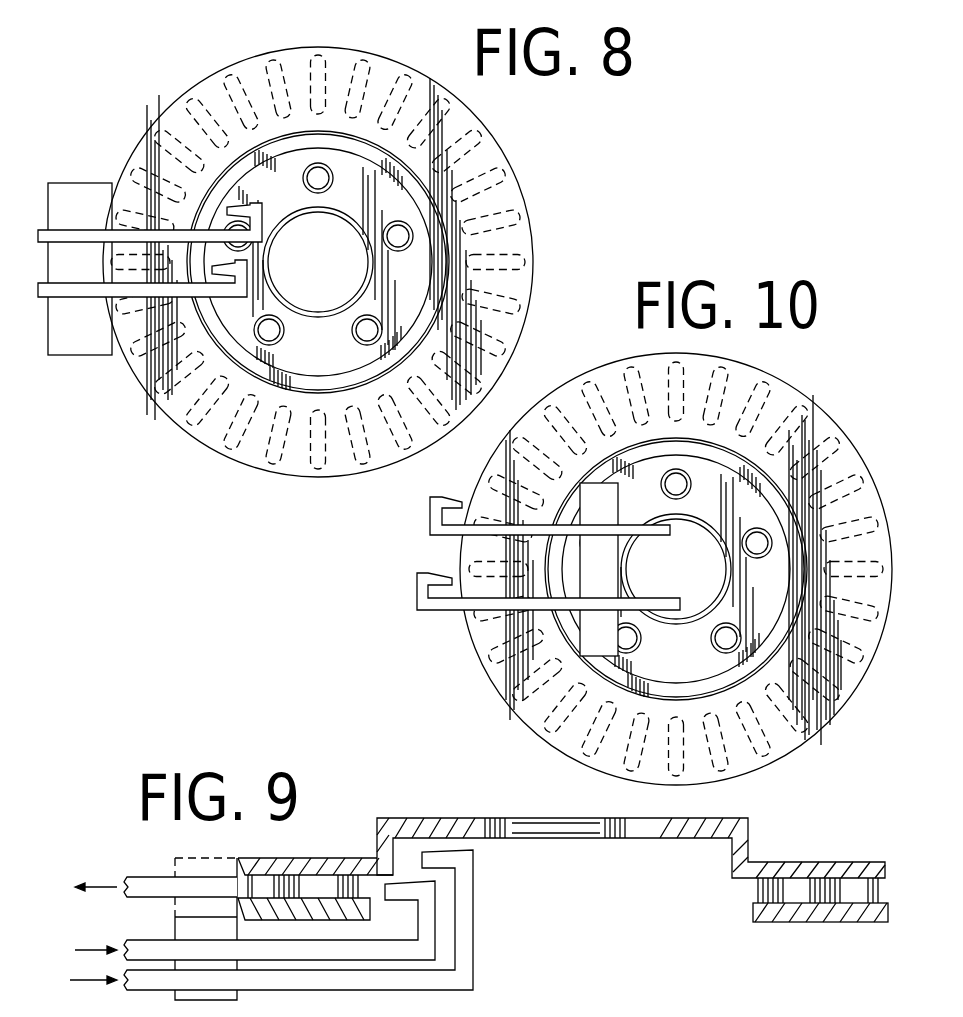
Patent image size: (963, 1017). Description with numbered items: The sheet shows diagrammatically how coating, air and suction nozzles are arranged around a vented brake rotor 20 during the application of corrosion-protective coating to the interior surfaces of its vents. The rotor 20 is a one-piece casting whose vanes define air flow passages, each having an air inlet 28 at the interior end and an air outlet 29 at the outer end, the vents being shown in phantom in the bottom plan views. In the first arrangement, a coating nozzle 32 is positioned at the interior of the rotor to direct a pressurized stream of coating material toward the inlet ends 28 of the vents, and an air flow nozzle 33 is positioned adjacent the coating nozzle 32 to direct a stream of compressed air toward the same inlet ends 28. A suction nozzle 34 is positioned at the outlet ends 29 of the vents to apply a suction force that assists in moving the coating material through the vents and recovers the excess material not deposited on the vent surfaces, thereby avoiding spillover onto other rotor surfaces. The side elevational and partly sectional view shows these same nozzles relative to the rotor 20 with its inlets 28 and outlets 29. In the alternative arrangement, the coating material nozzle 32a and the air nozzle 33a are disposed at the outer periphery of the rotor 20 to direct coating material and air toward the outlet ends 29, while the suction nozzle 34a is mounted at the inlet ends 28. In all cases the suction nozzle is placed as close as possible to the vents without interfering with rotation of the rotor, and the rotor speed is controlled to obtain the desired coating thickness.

In FIG. 8, the brake rotor 20 is at (512, 156).
In FIG. 10, the brake rotor 20 is at (802, 383).
In FIG. 9, the brake rotor 20 is at (640, 890).
In FIG. 9, the air inlet 28 is at (757, 887).
In FIG. 9, the air outlet 29 is at (885, 893).
In FIG. 8, the coating nozzle 32 is at (228, 268).
In FIG. 9, the coating nozzle 32 is at (428, 892).
In FIG. 8, the air flow nozzle 33 is at (240, 212).
In FIG. 9, the air flow nozzle 33 is at (467, 862).
In FIG. 8, the suction nozzle 34 is at (83, 196).
In FIG. 9, the suction nozzle 34 is at (190, 867).
In FIG. 10, the coating material nozzle 32a is at (417, 580).
In FIG. 10, the air nozzle 33a is at (428, 505).
In FIG. 10, the suction nozzle 34a is at (585, 630).